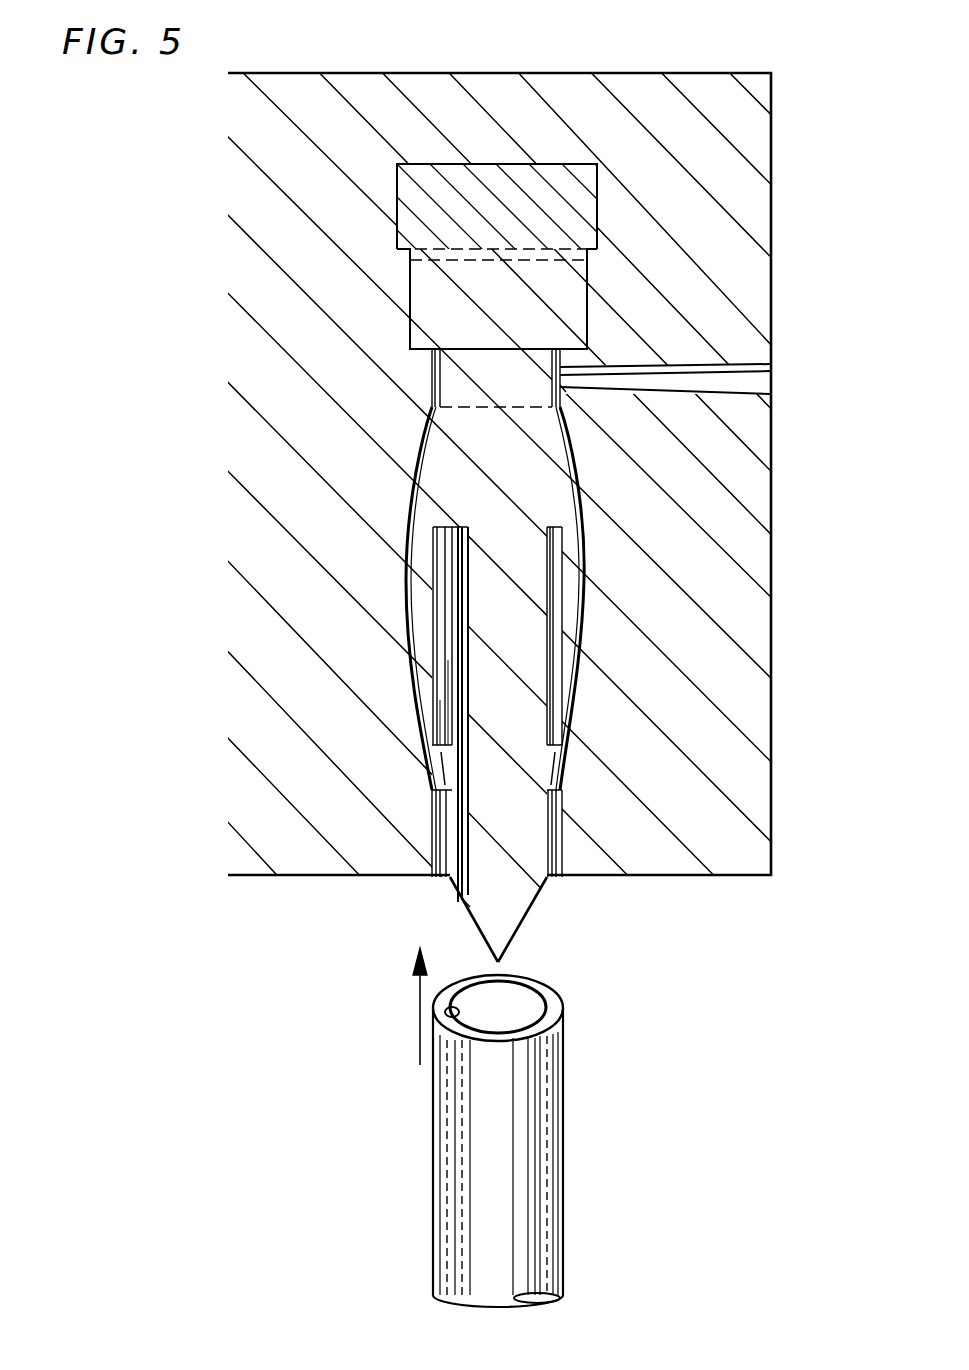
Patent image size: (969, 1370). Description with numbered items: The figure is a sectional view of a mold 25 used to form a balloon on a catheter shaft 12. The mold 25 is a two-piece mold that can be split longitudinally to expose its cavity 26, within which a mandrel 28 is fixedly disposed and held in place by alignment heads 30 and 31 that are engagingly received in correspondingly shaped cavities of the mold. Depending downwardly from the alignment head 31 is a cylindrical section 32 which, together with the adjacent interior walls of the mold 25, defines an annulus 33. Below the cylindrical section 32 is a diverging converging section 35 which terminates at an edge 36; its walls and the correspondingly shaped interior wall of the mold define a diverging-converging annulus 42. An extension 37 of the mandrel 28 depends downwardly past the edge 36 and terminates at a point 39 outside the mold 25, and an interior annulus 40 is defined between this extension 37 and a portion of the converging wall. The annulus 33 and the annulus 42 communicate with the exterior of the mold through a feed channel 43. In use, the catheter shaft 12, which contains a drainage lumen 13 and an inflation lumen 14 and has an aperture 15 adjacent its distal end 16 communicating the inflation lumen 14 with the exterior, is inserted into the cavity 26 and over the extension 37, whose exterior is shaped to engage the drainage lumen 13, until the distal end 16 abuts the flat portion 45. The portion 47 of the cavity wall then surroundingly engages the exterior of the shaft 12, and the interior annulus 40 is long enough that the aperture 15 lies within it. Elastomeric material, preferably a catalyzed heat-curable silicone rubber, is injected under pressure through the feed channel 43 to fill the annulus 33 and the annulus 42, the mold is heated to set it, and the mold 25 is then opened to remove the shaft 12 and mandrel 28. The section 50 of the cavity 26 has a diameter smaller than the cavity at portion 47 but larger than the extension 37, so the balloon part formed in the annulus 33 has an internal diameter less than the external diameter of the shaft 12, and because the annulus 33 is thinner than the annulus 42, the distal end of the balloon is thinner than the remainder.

The catheter shaft 12 is at (565, 1135).
The drainage lumen 13 is at (500, 1026).
The inflation lumen 14 is at (452, 1006).
The aperture 15 is at (440, 1100).
The distal end 16 is at (565, 1009).
The mold 25 is at (772, 244).
The cavity 26 is at (549, 882).
The mandrel 28 is at (590, 315).
The alignment head 30 is at (400, 216).
The alignment head 31 is at (432, 312).
The cylindrical section 32 is at (570, 430).
The annulus 33 is at (562, 389).
The diverging converging section 35 is at (496, 478).
The edge 36 is at (428, 754).
The extension 37 is at (478, 633).
The point 39 is at (503, 963).
The interior annulus 40 is at (440, 666).
The annulus 42 is at (405, 558).
The feed channel 43 is at (760, 370).
The flat portion 45 is at (555, 540).
The portion of the wall of the cavity 47 is at (420, 790).
The section of the cavity 50 is at (427, 352).